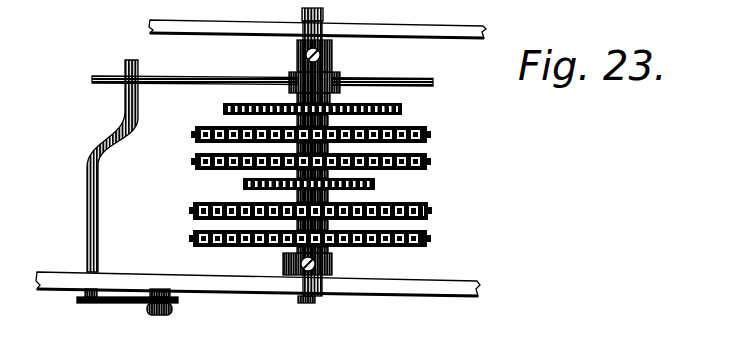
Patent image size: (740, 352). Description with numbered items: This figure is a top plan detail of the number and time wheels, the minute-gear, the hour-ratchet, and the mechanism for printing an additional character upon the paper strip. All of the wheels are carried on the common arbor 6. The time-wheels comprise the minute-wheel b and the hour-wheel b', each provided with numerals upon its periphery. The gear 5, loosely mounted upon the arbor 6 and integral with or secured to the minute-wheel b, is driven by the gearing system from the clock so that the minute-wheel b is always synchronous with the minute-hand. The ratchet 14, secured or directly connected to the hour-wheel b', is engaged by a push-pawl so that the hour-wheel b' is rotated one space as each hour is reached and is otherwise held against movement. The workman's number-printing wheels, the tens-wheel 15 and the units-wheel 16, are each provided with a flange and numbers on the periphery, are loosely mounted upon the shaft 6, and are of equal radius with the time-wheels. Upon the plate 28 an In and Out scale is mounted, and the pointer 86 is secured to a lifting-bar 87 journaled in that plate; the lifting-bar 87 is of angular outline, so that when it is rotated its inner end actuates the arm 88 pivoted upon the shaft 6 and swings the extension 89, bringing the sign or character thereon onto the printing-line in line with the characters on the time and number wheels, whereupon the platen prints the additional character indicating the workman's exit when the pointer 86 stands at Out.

The arbor 6 is at (314, 162).
The ratchet 14 is at (331, 108).
The hour-wheel b' is at (321, 136).
The minute-wheel b is at (318, 163).
The gear 5 is at (322, 187).
The tens-wheel 15 is at (324, 214).
The units-wheel 16 is at (324, 242).
The arm 88 is at (194, 69).
The extension 89 is at (382, 73).
The lifting-bar 87 is at (111, 178).
The pointer 86 is at (127, 310).
The plate 28 is at (258, 296).